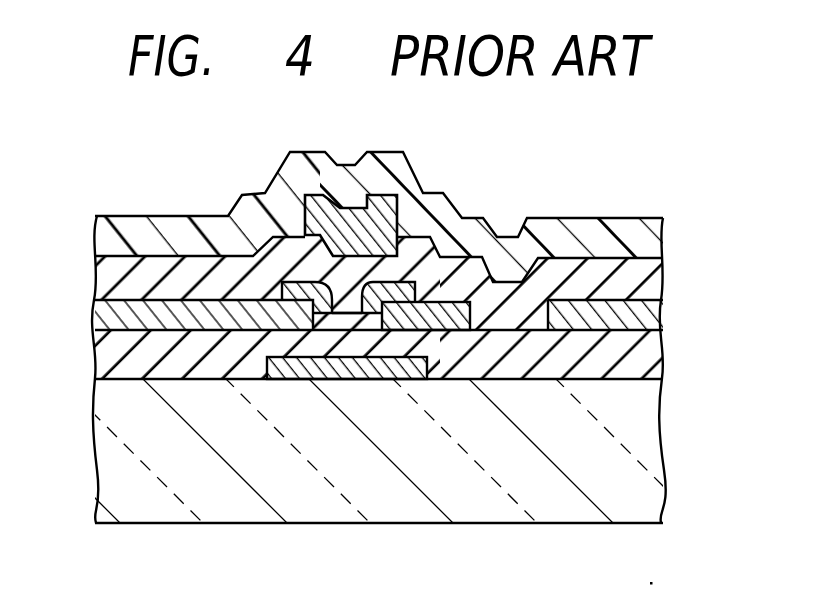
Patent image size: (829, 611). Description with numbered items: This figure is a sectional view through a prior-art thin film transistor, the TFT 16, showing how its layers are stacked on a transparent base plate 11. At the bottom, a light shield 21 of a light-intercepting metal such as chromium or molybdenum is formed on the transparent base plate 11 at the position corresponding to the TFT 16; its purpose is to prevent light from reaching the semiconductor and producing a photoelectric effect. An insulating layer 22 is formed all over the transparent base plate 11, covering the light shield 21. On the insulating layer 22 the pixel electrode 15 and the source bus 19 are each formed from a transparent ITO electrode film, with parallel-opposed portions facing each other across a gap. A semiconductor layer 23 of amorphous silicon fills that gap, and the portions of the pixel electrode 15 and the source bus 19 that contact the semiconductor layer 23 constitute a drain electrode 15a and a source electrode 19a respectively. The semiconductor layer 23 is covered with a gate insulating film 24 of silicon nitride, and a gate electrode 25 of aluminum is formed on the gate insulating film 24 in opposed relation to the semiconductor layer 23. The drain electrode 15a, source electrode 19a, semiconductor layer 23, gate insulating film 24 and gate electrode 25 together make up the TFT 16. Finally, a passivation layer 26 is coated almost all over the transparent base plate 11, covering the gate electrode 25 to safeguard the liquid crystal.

The transparent base plate 11 is at (648, 460).
The pixel electrode 15 is at (105, 315).
The drain electrode 15a is at (293, 317).
The TFT 16 is at (240, 183).
The source bus 19 is at (467, 317).
The source electrode 19a is at (427, 303).
The light shield 21 is at (470, 379).
The insulating layer 22 is at (633, 360).
The semiconductor layer 23 is at (292, 282).
The gate insulating film 24 is at (443, 258).
The gate electrode 25 is at (388, 202).
The passivation layer 26 is at (355, 168).